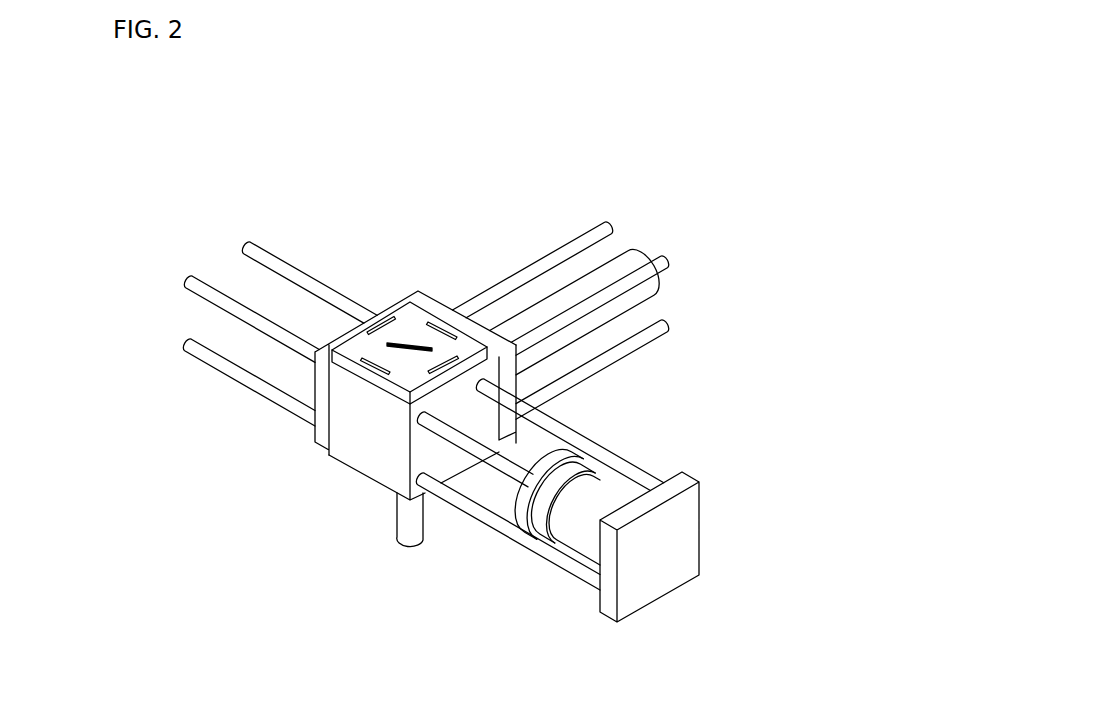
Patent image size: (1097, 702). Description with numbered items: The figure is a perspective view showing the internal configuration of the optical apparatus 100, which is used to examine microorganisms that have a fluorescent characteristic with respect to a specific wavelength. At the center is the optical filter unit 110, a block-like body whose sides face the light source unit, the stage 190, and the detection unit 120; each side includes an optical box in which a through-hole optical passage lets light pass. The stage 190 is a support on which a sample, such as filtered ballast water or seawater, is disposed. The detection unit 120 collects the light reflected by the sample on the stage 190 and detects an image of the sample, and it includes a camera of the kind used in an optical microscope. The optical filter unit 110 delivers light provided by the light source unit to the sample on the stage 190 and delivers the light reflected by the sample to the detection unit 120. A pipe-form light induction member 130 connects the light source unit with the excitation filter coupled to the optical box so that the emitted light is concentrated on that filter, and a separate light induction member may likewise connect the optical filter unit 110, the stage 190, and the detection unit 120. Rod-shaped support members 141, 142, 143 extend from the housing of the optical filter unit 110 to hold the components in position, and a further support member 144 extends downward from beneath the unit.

The optical apparatus 100 is at (603, 155).
The optical filter unit 110 is at (412, 320).
The detection unit 120 is at (578, 534).
The light induction member 130 is at (660, 290).
The support member 141 is at (572, 435).
The support member 142 is at (203, 292).
The support member 143 is at (537, 267).
The leg 144 is at (406, 522).
The stage 190 is at (320, 413).